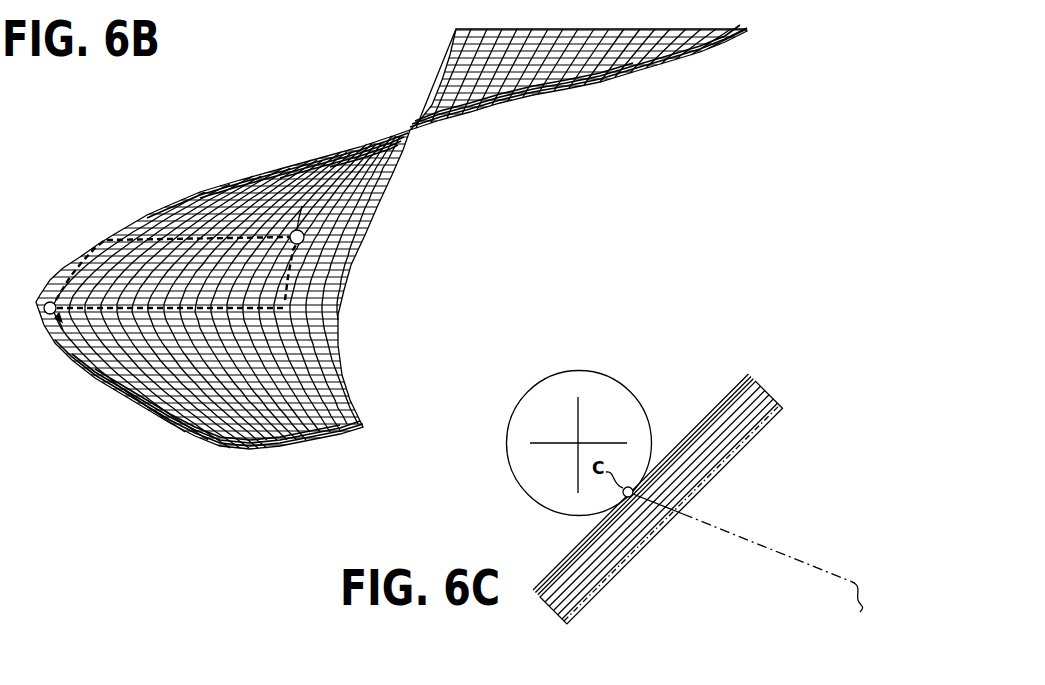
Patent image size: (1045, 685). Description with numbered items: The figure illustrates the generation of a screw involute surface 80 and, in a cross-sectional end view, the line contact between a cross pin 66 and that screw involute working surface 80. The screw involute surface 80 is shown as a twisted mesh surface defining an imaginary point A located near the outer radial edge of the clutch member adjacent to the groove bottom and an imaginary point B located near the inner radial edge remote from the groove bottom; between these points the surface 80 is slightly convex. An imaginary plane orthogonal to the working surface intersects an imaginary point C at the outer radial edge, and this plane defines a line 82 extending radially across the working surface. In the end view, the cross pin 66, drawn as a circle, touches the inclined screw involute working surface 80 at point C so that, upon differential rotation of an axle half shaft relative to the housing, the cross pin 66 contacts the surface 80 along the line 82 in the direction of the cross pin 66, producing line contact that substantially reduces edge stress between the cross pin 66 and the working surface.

In FIG. 6B, the screw involute surface 80 is at (201, 184).
In FIG. 6C, the screw involute surface 80 is at (733, 392).
In FIG. 6C, the cross pin 66 is at (596, 370).
In FIG. 6C, the line 82 is at (744, 541).